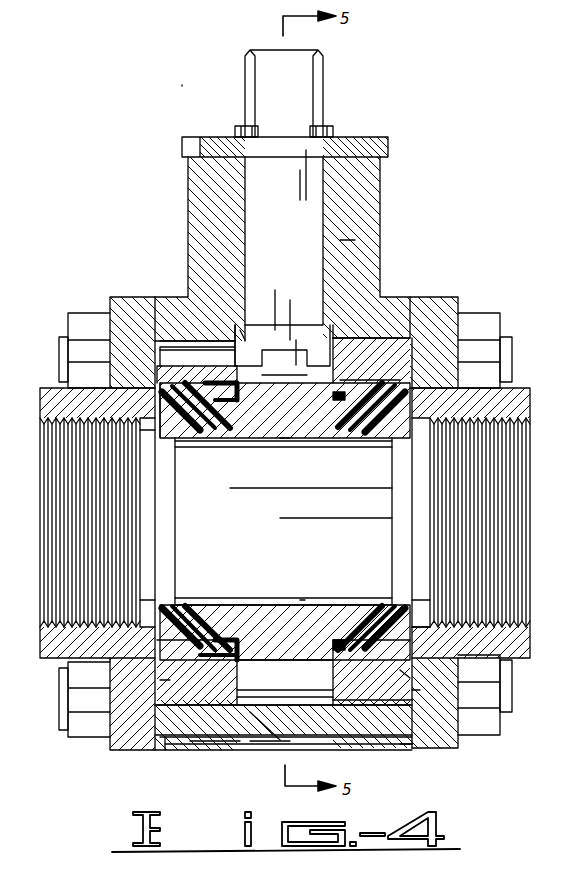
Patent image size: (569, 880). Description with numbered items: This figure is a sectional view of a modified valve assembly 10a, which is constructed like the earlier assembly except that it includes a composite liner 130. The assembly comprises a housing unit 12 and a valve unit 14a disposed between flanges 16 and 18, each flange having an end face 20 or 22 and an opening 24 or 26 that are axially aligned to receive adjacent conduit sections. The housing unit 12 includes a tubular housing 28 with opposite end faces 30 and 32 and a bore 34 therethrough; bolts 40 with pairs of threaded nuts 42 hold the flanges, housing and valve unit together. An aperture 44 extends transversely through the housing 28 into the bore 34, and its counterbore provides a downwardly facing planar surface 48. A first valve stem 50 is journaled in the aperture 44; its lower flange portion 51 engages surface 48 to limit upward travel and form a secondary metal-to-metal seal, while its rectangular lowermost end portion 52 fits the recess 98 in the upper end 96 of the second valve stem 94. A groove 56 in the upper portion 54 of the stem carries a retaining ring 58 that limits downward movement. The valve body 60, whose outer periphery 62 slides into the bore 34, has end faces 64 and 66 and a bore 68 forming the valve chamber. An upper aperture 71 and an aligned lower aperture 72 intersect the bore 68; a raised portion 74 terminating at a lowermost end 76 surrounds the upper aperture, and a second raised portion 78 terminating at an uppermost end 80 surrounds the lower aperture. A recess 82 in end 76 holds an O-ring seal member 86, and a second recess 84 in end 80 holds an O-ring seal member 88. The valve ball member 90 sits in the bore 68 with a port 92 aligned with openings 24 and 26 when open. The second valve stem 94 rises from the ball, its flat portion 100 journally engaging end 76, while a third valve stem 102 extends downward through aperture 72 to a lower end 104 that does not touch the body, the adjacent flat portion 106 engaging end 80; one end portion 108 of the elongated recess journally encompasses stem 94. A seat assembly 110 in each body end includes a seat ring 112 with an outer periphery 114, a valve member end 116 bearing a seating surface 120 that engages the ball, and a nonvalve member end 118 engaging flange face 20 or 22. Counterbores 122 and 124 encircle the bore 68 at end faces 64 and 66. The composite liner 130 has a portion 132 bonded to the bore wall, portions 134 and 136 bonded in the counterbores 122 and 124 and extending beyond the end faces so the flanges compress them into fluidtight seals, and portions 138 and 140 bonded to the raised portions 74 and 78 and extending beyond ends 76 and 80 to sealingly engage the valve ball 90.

The valve assembly 10a is at (213, 112).
The housing unit 12 is at (388, 210).
The valve unit 14a is at (392, 302).
The flange 16 is at (118, 752).
The flange 18 is at (440, 750).
The end face 20 is at (163, 752).
The end face 22 is at (395, 750).
The opening 24 is at (45, 452).
The opening 26 is at (528, 610).
The tubular housing 28 is at (355, 242).
The end face 30 is at (156, 718).
The end face 32 is at (418, 728).
The bore 34 is at (225, 706).
The bolts 40 is at (60, 360).
The threaded nuts 42 is at (80, 325).
The aperture 44 is at (315, 185).
The downwardly facing planar surface 48 is at (282, 330).
The first valve stem 50 is at (360, 145).
The lower flange portion 51 is at (285, 315).
The lowermost end portion 52 is at (296, 370).
The upper portion 54 is at (305, 80).
The groove 56 is at (258, 132).
The retaining ring 58 is at (330, 132).
The valve body 60 is at (330, 745).
The outer periphery 62 is at (215, 745).
The end face 64 is at (156, 682).
The end face 66 is at (418, 692).
The bore 68 is at (190, 622).
The upper aperture 71 is at (272, 412).
The lower aperture 72 is at (268, 700).
The raised portion 74 is at (360, 415).
The lowermost end 76 is at (335, 416).
The second raised portion 78 is at (225, 640).
The uppermost end 80 is at (350, 640).
The recess 82 is at (197, 375).
The second recess 84 is at (346, 662).
The O-ring seal member 86 is at (370, 373).
The O-ring seal member 88 is at (240, 648).
The valve ball member 90 is at (270, 600).
The port 92 is at (300, 600).
The second valve stem 94 is at (215, 338).
The upper end 96 is at (235, 345).
The recess 98 is at (293, 427).
The flat portion 100 is at (270, 462).
The third valve stem 102 is at (290, 706).
The lower end 104 is at (268, 746).
The flat portion 106 is at (172, 360).
The end portion 108 is at (350, 368).
The seat assembly 110 is at (168, 595).
The seat ring 112 is at (160, 618).
The outer periphery 114 is at (165, 393).
The valve member end 116 is at (200, 405).
The nonvalve member end 118 is at (152, 438).
The seating surface 120 is at (190, 425).
The counterbore 122 is at (178, 750).
The second counterbore 124 is at (405, 676).
The composite liner 130 is at (371, 672).
The portion 132 is at (197, 672).
The portion 134 is at (155, 645).
The portion 136 is at (425, 640).
The portion 138 is at (235, 416).
The portion 140 is at (215, 618).